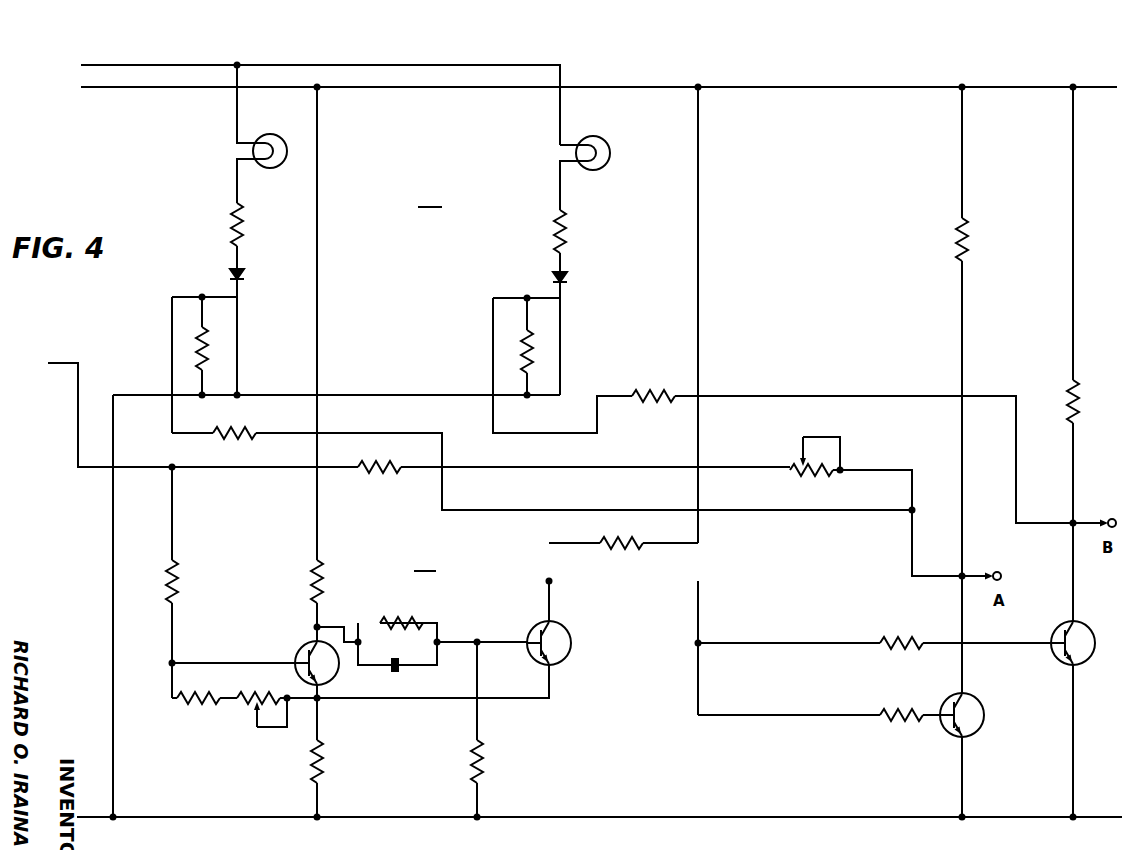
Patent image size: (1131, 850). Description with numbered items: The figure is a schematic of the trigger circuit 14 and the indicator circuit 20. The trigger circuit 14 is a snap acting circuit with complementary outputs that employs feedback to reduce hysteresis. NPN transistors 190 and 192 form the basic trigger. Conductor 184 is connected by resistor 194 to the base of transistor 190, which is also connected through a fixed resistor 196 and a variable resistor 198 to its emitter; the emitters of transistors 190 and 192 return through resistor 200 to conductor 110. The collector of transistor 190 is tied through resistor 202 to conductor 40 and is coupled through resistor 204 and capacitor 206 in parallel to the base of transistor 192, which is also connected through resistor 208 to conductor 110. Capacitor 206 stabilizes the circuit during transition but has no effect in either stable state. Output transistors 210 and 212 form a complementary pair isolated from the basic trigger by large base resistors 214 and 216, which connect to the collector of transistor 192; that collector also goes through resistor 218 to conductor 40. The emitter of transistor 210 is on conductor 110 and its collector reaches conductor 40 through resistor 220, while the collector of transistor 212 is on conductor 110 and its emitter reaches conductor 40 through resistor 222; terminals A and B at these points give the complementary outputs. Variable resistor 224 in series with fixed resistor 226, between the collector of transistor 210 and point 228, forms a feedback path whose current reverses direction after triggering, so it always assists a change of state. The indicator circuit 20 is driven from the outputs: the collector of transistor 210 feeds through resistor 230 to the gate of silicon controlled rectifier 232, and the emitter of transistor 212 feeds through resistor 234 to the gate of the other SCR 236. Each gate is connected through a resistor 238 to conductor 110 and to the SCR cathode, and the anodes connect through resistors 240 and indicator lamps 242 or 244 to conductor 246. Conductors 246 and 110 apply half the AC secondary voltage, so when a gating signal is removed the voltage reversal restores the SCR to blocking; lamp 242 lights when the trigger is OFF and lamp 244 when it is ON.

The conductor 246 is at (405, 66).
The conductor 40 is at (170, 87).
The indicator circuit 20 is at (430, 198).
The trigger circuit 14 is at (425, 562).
The indicator lamp 242 is at (283, 166).
The indicator lamp 244 is at (605, 166).
The resistor 240 is at (243, 240).
The silicon controlled rectifier 232 is at (245, 276).
The silicon controlled rectifier 236 is at (568, 279).
The resistor 238 is at (208, 357).
The conductor 184 is at (60, 363).
The conductor 110 is at (82, 816).
The resistor 230 is at (236, 432).
The point 228 is at (173, 468).
The fixed resistor 226 is at (378, 471).
The resistor 234 is at (648, 395).
The variable resistor 224 is at (800, 474).
The resistor 220 is at (966, 256).
The resistor 222 is at (1066, 392).
The resistor 218 is at (634, 548).
The base resistor 216 is at (884, 640).
The base resistor 214 is at (884, 712).
The output transistor 212 is at (1055, 660).
The output transistor 210 is at (984, 722).
The NPN transistor 192 is at (571, 652).
The NPN transistor 190 is at (301, 650).
The resistor 194 is at (178, 580).
The fixed resistor 196 is at (206, 700).
The variable resistor 198 is at (256, 696).
The resistor 200 is at (322, 768).
The resistor 202 is at (322, 584).
The resistor 204 is at (400, 624).
The capacitor 206 is at (400, 668).
The resistor 208 is at (482, 768).